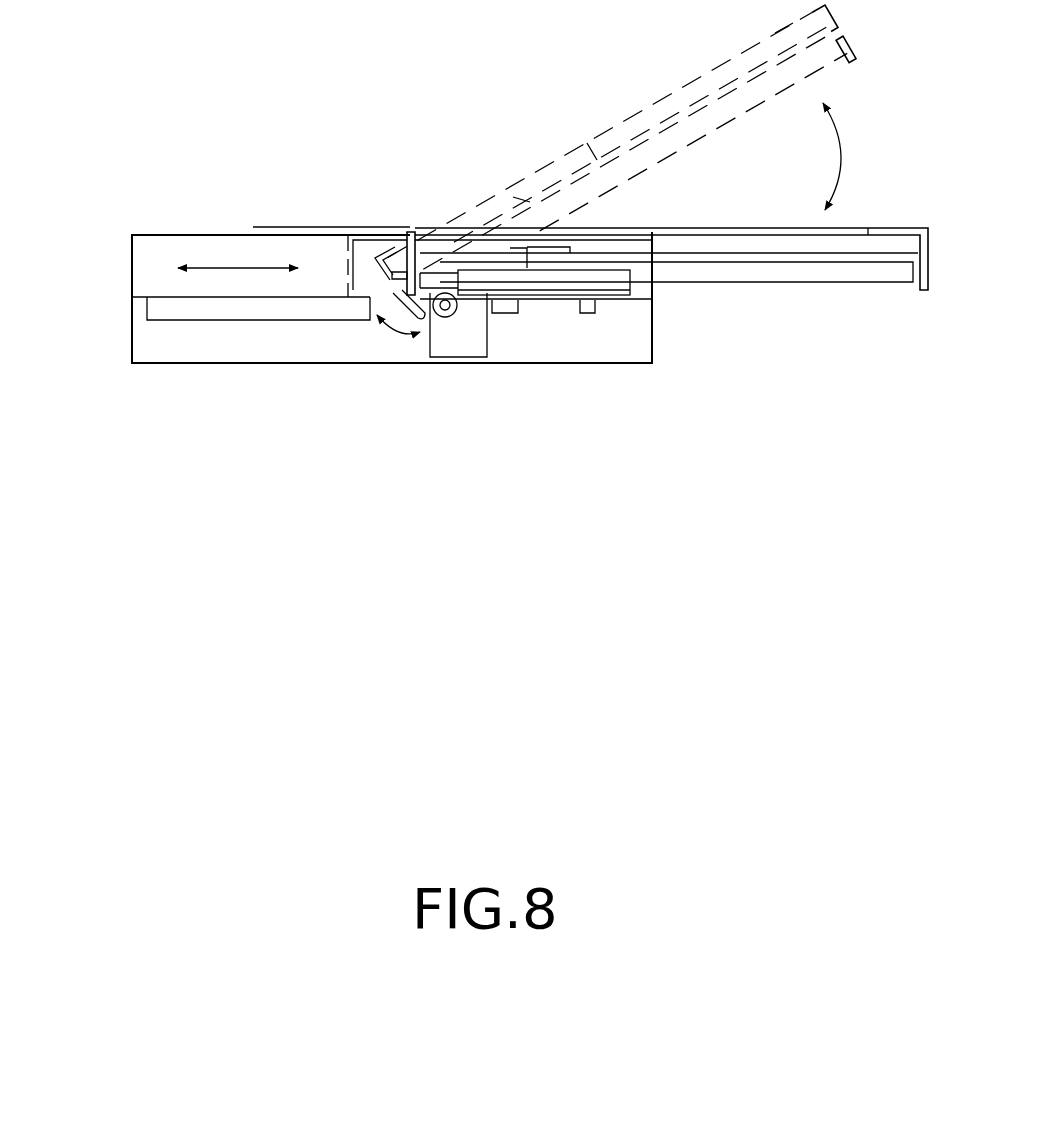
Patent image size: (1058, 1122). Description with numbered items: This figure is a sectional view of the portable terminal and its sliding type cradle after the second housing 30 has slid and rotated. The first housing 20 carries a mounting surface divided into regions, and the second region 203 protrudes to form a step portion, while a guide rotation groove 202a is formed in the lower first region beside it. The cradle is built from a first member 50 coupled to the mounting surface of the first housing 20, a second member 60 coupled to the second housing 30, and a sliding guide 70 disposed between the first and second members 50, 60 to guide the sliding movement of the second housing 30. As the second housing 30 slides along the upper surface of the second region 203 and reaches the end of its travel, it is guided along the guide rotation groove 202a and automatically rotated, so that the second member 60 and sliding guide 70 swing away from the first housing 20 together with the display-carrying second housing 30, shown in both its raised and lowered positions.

The first housing 20 is at (228, 363).
The second region 203 is at (143, 305).
The guide rotation groove 202a is at (423, 318).
The first member 50 is at (543, 300).
The second member 60 is at (822, 257).
The sliding guide 70 is at (622, 277).
The second housing 30 is at (622, 122).